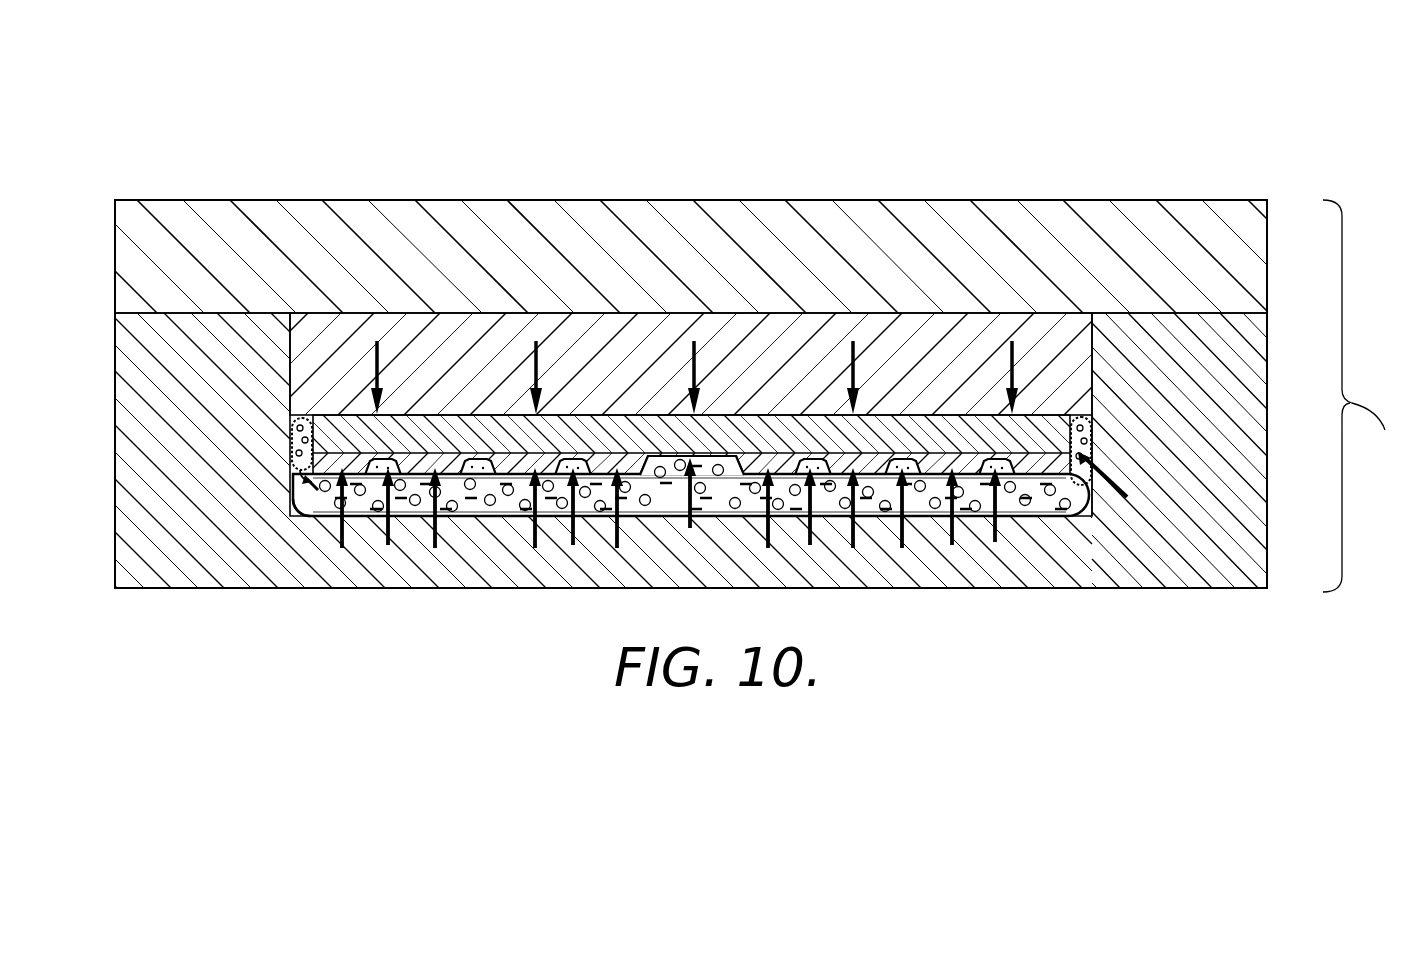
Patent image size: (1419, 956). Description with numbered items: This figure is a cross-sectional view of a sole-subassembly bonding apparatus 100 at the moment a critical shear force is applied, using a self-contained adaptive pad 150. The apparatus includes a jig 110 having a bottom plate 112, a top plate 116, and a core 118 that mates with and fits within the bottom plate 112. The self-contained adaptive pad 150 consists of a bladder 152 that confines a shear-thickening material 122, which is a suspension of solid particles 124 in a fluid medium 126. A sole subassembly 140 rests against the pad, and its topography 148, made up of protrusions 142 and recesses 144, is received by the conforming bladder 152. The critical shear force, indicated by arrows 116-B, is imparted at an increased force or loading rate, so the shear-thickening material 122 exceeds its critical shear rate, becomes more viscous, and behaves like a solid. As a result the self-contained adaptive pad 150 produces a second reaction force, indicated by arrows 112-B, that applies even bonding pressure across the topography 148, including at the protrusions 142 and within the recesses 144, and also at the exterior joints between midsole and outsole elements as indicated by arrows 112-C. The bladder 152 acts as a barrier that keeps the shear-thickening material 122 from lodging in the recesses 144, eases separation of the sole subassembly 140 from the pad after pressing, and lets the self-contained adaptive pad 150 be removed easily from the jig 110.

The sole-subassembly bonding apparatus 100 is at (732, 121).
The jig 110 is at (1365, 396).
The bottom plate 112 is at (1233, 583).
The arrows indicating second reaction force 112-B is at (572, 511).
The arrows indicating bonding pressure at joints 112-C is at (1123, 478).
The top plate 116 is at (1085, 217).
The arrows indicating critical shear force 116-B is at (693, 365).
The core 118 is at (927, 333).
The shear-thickening material 122 is at (1043, 518).
The solid particles 124 is at (1030, 518).
The fluid medium 126 is at (1043, 514).
The sole subassembly 140 is at (1057, 413).
The protrusions 142 is at (632, 465).
The recesses 144 is at (478, 467).
The topography 148 is at (300, 507).
The self-contained adaptive pad 150 is at (306, 511).
The bladder 152 is at (1093, 523).